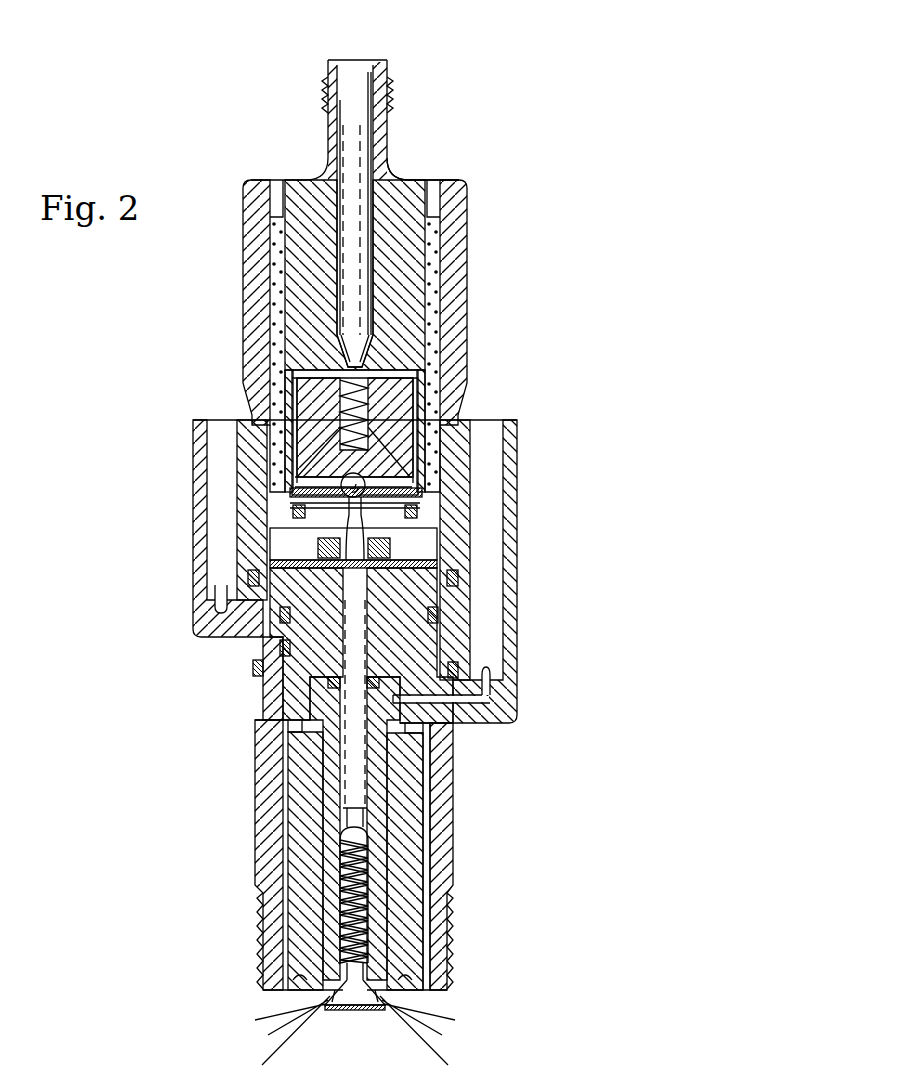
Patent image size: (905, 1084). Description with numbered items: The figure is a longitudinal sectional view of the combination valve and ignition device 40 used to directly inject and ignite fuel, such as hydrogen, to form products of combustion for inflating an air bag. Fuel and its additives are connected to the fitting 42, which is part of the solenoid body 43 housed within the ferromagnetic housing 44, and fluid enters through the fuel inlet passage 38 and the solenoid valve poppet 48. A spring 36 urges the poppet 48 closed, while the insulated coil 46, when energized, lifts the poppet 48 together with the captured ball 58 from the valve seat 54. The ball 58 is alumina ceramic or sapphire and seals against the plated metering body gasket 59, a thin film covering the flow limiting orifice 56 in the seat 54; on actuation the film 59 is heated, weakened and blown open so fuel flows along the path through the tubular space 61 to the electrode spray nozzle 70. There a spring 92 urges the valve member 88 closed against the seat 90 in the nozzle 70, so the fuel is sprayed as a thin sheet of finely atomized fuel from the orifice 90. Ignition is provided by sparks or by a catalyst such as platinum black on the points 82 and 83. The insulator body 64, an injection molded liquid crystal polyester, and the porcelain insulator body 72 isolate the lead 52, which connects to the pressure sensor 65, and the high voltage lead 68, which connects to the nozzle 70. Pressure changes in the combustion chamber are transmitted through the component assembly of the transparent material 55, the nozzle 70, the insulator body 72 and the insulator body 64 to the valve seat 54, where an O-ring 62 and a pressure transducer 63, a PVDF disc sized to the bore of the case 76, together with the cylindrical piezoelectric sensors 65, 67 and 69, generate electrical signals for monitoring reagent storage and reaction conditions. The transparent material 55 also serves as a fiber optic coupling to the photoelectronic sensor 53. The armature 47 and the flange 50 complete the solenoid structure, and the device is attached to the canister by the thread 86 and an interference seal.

The combination valve and ignition device 40 is at (243, 125).
The fuel inlet passage 38 is at (340, 60).
The fitting 42 is at (380, 65).
The spring 36 is at (363, 365).
The solenoid body 43 is at (407, 178).
The ferromagnetic housing 44 is at (456, 200).
The insulated coil 46 is at (436, 237).
The solenoid valve poppet 48 is at (404, 393).
The armature 47 is at (428, 410).
The plated metering body gasket 59 is at (380, 490).
The ball 58 is at (297, 480).
The flow limiting orifice 56 is at (297, 497).
The O-ring 62 is at (420, 530).
The pressure transducer 63 is at (440, 565).
The cylindrical piezoelectric sensor 65 is at (440, 640).
The outer flange 50 is at (220, 424).
The lead 52 is at (203, 610).
The valve seat 54 is at (440, 505).
The cylindrical piezoelectric sensor 67 is at (248, 572).
The photoelectronic sensor 53 is at (262, 648).
The cylindrical piezoelectric sensor 69 is at (257, 670).
The high voltage lead 68 is at (487, 682).
The insulator body 64 is at (500, 713).
The tubular space 61 is at (320, 690).
The transparent material 55 is at (270, 790).
The electrode spray nozzle 70 is at (320, 830).
The insulator body 72 is at (410, 800).
The case 76 is at (450, 855).
The thread 86 is at (447, 920).
The ignition point 83 is at (443, 994).
The seat 90 is at (380, 985).
The spring 92 is at (340, 870).
The ignition point 82 is at (355, 1010).
The valve member 88 is at (322, 993).